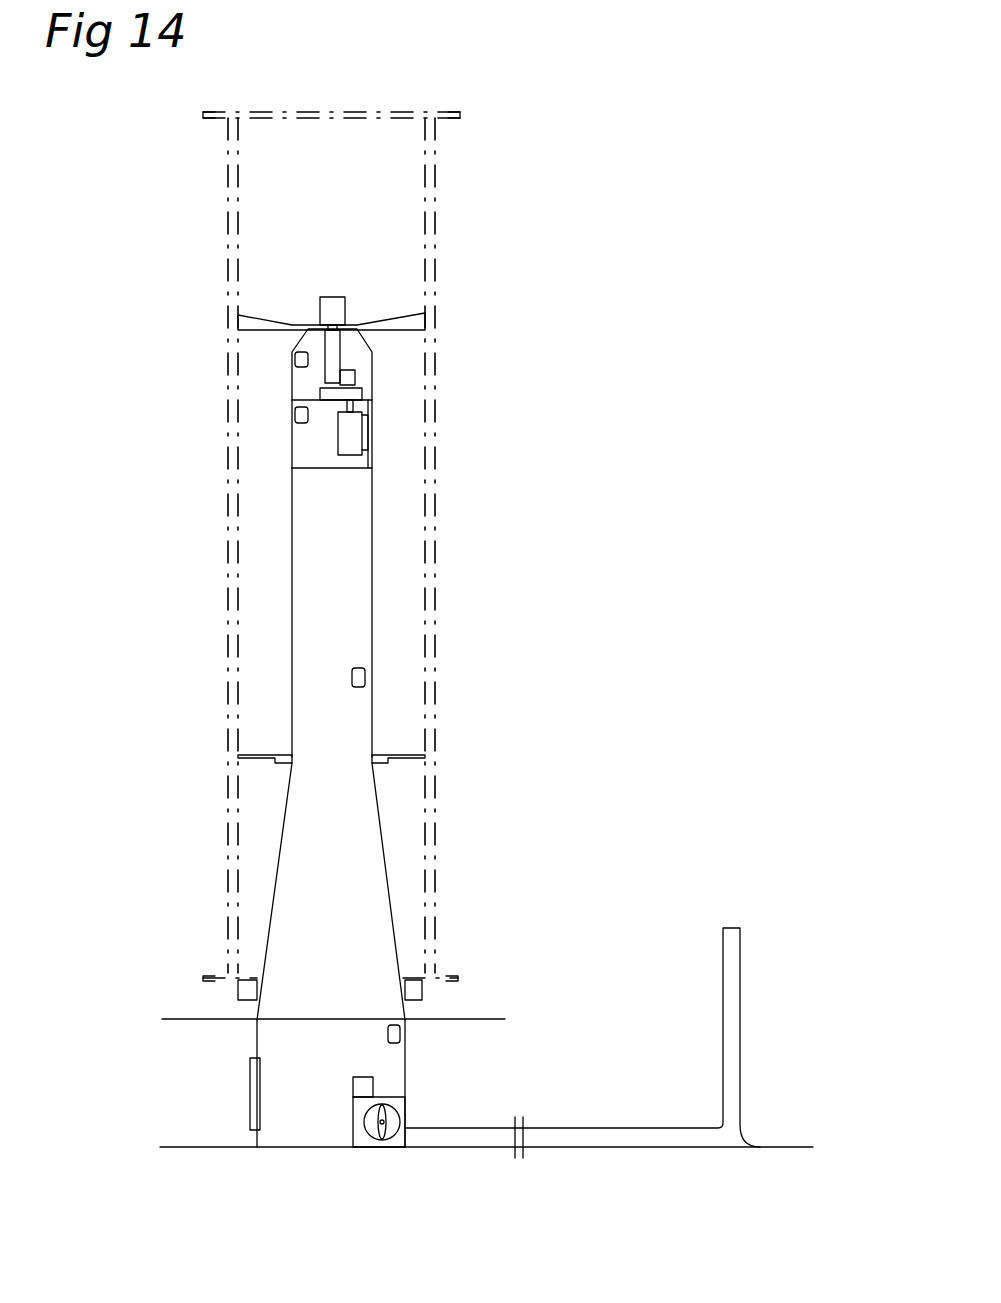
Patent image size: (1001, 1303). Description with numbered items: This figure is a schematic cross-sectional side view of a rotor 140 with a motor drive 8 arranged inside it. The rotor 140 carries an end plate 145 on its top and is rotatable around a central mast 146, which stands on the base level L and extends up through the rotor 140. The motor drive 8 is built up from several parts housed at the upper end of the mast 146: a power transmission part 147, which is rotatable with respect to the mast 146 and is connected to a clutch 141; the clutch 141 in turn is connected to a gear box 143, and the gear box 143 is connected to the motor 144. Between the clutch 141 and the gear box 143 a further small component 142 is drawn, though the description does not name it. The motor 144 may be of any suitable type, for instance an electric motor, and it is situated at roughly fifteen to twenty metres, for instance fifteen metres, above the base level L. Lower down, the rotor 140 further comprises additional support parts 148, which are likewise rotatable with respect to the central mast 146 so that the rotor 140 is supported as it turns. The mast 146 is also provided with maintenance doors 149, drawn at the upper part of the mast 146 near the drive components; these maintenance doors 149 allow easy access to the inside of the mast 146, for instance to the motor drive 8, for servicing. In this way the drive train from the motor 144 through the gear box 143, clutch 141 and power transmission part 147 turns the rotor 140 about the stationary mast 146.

The motor drive 8 is at (302, 311).
The rotor 140 is at (432, 212).
The clutch 141 is at (330, 345).
The coupling 142 is at (348, 380).
The gear box 143 is at (353, 393).
The motor 144 is at (353, 435).
The end plate 145 is at (336, 108).
The central mast 146 is at (332, 525).
The power transmission part 147 is at (403, 323).
The additional support parts 148 is at (400, 757).
The maintenance doors 149 is at (295, 360).
The base level L is at (172, 1147).